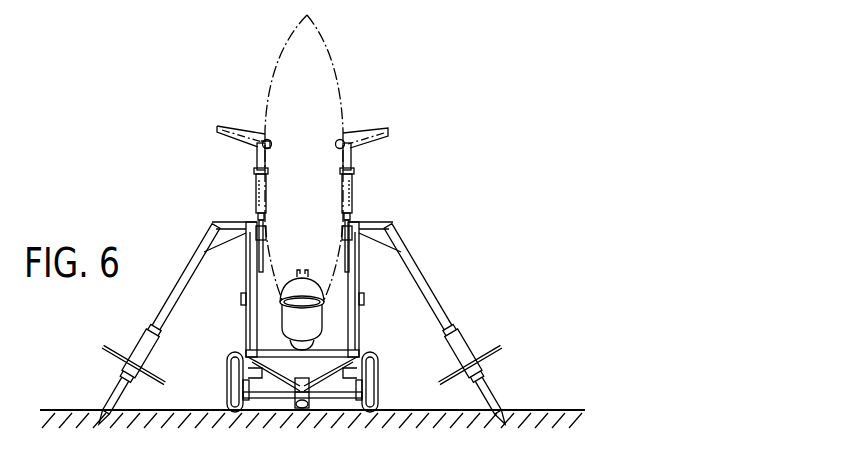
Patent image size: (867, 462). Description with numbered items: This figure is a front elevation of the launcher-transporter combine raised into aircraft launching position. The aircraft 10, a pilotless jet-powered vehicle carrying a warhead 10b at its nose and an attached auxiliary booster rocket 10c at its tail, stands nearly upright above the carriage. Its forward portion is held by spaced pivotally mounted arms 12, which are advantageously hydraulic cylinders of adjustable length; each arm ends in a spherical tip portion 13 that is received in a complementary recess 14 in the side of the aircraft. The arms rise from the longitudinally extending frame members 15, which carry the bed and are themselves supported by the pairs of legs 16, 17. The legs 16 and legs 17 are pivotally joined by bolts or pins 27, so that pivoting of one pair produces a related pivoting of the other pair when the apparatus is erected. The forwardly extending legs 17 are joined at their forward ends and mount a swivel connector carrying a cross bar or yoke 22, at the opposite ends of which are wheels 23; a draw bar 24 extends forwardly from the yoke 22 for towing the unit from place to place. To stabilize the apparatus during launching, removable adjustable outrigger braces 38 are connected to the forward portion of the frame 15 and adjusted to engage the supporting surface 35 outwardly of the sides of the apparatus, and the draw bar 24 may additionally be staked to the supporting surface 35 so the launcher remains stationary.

The aircraft 10 is at (302, 158).
The warhead 10b is at (317, 38).
The auxiliary booster rocket 10c is at (285, 313).
The pivotally mounted arms 12 is at (256, 192).
The spherical tip portions 13 is at (344, 140).
The recesses 14 is at (268, 152).
The frame members 15 is at (265, 229).
The legs 16 is at (363, 357).
The legs 17 is at (246, 270).
The cross bar or yoke 22 is at (279, 398).
The wheels 23 is at (226, 370).
The draw bar 24 is at (306, 400).
The bolts or pins 27 is at (242, 298).
The supporting surface 35 is at (532, 412).
The outrigger braces 38 is at (187, 268).